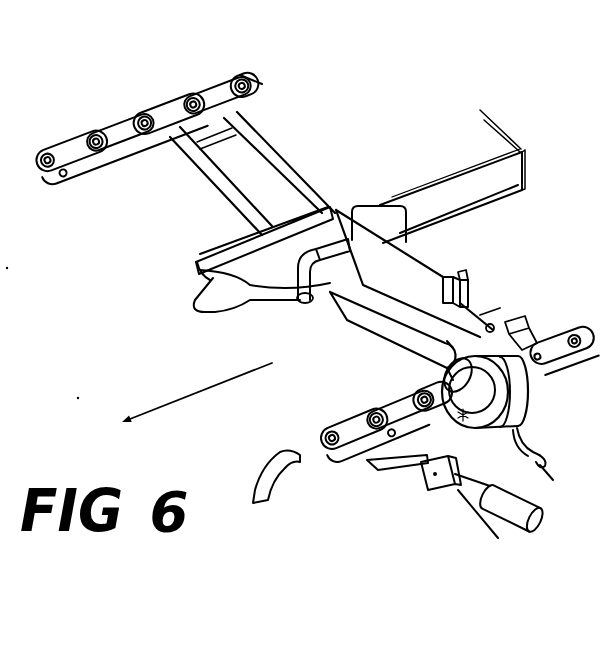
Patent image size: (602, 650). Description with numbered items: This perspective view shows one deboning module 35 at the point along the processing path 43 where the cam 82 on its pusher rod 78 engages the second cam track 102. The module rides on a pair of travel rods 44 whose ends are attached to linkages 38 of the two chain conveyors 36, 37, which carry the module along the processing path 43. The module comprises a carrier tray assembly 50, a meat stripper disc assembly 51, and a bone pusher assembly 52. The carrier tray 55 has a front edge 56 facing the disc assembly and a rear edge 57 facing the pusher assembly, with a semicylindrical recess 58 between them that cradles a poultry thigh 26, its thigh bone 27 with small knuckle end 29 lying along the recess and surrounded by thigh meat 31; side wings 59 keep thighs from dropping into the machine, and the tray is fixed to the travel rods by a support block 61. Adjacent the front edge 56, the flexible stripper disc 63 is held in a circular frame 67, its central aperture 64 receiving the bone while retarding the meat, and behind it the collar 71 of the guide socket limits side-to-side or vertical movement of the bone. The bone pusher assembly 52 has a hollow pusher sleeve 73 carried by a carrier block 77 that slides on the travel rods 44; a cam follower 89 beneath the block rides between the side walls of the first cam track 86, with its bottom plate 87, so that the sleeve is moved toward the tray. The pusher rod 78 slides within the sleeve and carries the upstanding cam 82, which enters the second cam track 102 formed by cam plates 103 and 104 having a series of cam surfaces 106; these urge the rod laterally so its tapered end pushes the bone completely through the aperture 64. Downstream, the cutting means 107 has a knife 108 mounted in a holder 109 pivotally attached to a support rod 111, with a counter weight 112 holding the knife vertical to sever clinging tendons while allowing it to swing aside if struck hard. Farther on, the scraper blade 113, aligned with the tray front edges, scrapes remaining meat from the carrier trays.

The poultry thigh 26 is at (465, 437).
The thigh bone 27 is at (537, 458).
The small knuckle end 29 is at (552, 480).
The thigh meat 31 is at (430, 382).
The deboning module 35 is at (333, 368).
The chain conveyor 36 is at (571, 294).
The chain conveyor 37 is at (157, 96).
The linkage 38 is at (223, 83).
The processing path 43 is at (175, 396).
The travel rod 44 is at (193, 165).
The carrier tray assembly 50 is at (496, 308).
The meat stripper disc assembly 51 is at (573, 323).
The bone pusher assembly 52 is at (400, 321).
The carrier tray 55 is at (353, 335).
The front edge 56 is at (492, 325).
The rear edge 57 is at (347, 317).
The semicylindrical recess 58 is at (467, 305).
The wing 59 is at (465, 280).
The support block 61 is at (467, 273).
The stripper disc 63 is at (522, 330).
The aperture 64 is at (473, 432).
The circular frame 67 is at (524, 392).
The collar 71 is at (524, 412).
The pusher sleeve 73 is at (378, 357).
The carrier block 77 is at (420, 232).
The pusher rod 78 is at (313, 264).
The cam 82 is at (305, 302).
The first cam track 86 is at (526, 168).
The bottom plate 87 is at (507, 129).
The cam follower 89 is at (357, 210).
The second cam track 102 is at (186, 350).
The cam plate 103 is at (252, 314).
The cam plate 104 is at (252, 253).
The cam surface 106 is at (220, 300).
The cutting means 107 is at (426, 525).
The knife 108 is at (367, 463).
The holder 109 is at (413, 482).
The support rod 111 is at (453, 512).
The counter weight 112 is at (517, 523).
The scraper blade 113 is at (267, 453).